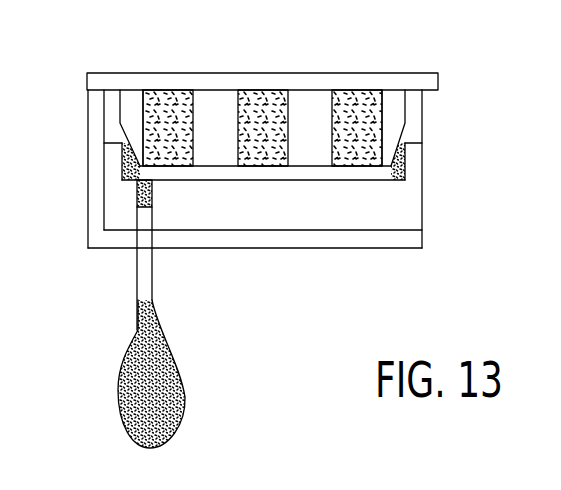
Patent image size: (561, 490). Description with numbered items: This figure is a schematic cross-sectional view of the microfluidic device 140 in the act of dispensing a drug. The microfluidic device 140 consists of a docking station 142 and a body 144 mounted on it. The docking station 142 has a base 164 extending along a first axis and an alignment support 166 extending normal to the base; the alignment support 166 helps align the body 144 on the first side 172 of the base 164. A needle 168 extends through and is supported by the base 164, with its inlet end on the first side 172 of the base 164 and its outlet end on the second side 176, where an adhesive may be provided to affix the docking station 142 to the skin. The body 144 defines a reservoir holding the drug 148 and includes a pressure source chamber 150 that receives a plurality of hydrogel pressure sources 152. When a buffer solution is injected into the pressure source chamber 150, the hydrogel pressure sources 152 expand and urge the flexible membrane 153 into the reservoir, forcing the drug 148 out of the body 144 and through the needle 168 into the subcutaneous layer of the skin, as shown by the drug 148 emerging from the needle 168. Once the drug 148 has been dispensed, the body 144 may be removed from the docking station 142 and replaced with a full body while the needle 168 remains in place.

The microfluidic device 140 is at (431, 187).
The docking station 142 is at (343, 250).
The body 144 is at (424, 115).
The drug 148 is at (152, 192).
The pressure source chamber 150 is at (133, 101).
The hydrogel pressure sources 152 is at (173, 90).
The flexible membrane 153 is at (376, 172).
The base 164 is at (403, 249).
The alignment support 166 is at (97, 170).
The needle 168 is at (138, 272).
The first side 172 is at (282, 230).
The second side 176 is at (202, 249).